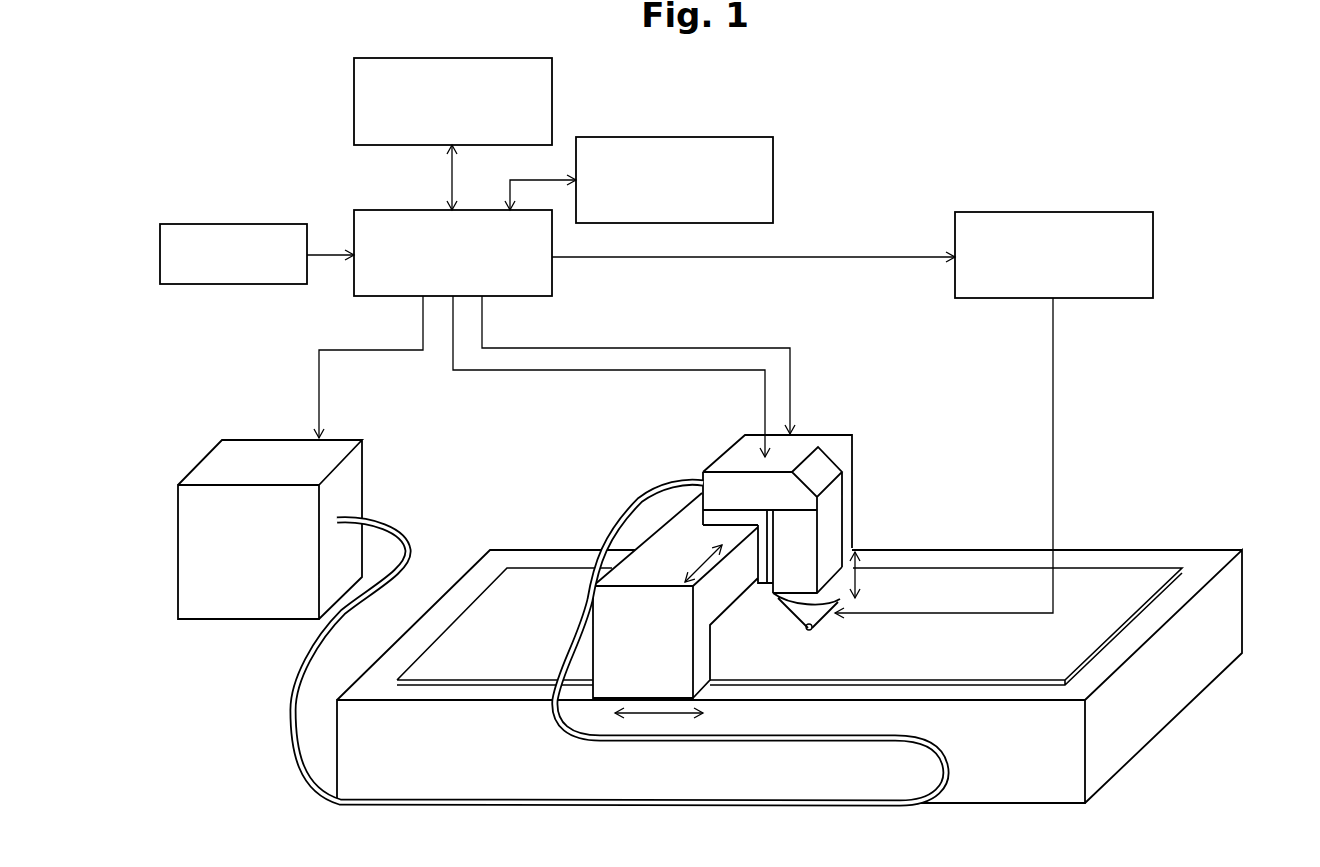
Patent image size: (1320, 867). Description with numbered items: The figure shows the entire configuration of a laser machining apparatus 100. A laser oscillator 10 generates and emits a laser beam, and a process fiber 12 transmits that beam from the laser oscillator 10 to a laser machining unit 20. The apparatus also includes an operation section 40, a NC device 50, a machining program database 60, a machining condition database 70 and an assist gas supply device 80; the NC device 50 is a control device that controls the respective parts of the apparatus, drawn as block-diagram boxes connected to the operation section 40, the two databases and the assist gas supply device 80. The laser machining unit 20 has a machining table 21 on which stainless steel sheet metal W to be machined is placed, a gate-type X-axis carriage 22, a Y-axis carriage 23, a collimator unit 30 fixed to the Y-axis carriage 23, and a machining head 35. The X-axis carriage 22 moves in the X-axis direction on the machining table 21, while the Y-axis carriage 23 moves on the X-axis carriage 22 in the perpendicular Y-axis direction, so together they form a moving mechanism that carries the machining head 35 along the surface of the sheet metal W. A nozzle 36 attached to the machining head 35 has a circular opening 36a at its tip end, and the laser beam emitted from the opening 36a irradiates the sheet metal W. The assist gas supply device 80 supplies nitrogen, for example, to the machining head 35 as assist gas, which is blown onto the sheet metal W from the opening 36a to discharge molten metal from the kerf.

The laser machining apparatus 100 is at (886, 128).
The laser oscillator 10 is at (276, 440).
The process fiber 12 is at (293, 747).
The laser machining unit 20 is at (936, 550).
The machining table 21 is at (1088, 558).
The X-axis carriage 22 is at (855, 468).
The Y-axis carriage 23 is at (763, 586).
The collimator unit 30 is at (703, 464).
The machining head 35 is at (848, 524).
The nozzle 36 is at (828, 608).
The opening 36a is at (813, 630).
The operation section 40 is at (245, 223).
The NC device 50 is at (401, 209).
The machining program database 60 is at (456, 57).
The machining condition database 70 is at (677, 136).
The assist gas supply device 80 is at (1057, 211).
The sheet metal W is at (993, 582).